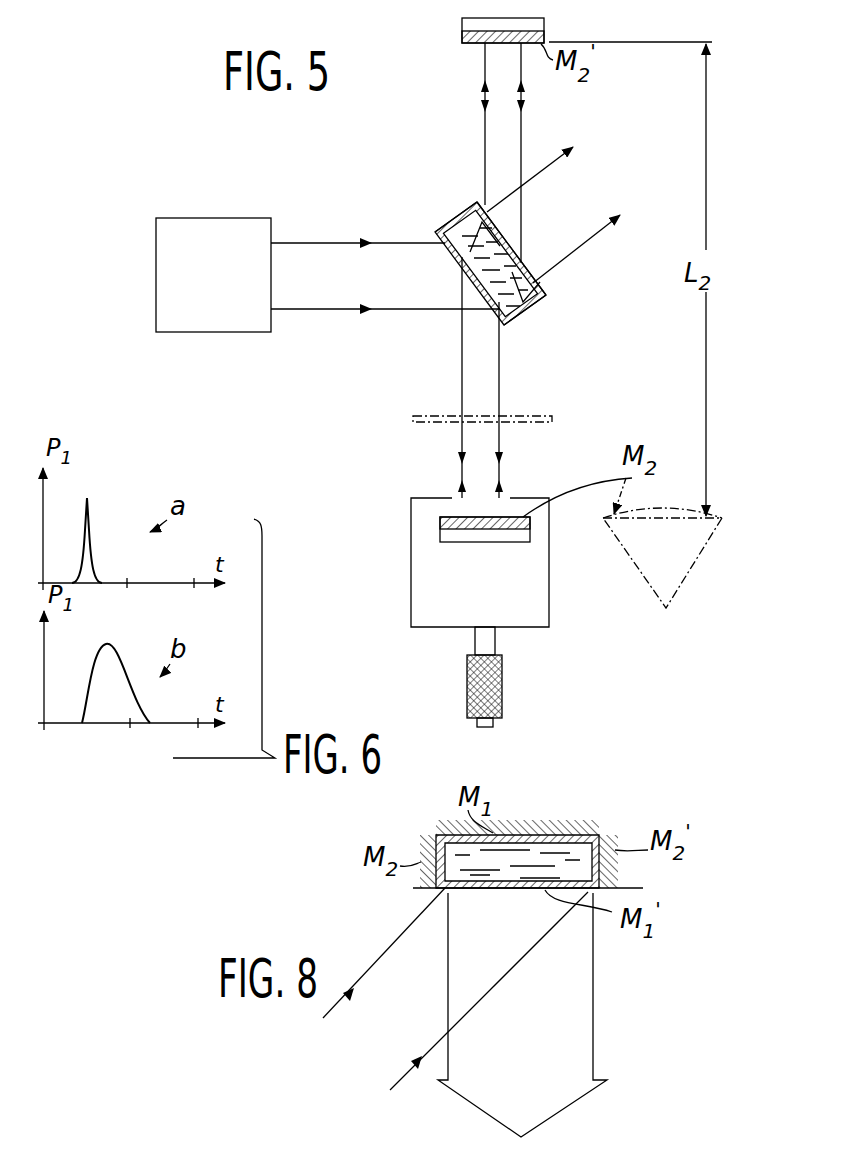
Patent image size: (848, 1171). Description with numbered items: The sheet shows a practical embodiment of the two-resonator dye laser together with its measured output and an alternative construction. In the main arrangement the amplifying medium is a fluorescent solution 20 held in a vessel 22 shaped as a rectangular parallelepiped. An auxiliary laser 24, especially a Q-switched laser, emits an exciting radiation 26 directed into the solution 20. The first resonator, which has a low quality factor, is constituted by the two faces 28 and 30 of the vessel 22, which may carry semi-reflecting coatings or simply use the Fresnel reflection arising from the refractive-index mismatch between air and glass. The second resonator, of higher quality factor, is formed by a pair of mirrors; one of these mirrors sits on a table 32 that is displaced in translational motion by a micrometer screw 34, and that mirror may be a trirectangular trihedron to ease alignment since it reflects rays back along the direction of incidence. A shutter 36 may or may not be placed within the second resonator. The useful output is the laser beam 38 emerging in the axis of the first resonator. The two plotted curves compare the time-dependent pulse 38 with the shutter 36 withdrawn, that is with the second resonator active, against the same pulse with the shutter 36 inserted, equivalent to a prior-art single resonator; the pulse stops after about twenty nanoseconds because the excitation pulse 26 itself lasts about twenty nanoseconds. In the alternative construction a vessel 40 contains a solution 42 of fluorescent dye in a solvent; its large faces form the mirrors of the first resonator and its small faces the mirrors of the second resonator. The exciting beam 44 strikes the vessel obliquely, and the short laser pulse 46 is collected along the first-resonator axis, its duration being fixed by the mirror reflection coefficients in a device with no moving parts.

In FIG. 5, the fluorescent solution 20 is at (538, 298).
In FIG. 5, the vessel 22 is at (522, 316).
In FIG. 5, the auxiliary laser 24 is at (228, 289).
In FIG. 5, the exciting radiation 26 is at (324, 258).
In FIG. 5, the face of the vessel 28 is at (443, 257).
In FIG. 5, the face of the vessel 30 is at (530, 262).
In FIG. 5, the table 32 is at (549, 565).
In FIG. 5, the micrometer screw 34 is at (502, 664).
In FIG. 5, the shutter 36 is at (532, 415).
In FIG. 5, the laser beam 38 is at (580, 210).
In FIG. 8, the vessel 40 is at (590, 815).
In FIG. 8, the solution 42 is at (575, 868).
In FIG. 8, the exciting beam 44 is at (407, 955).
In FIG. 8, the laser pulse 46 is at (568, 993).